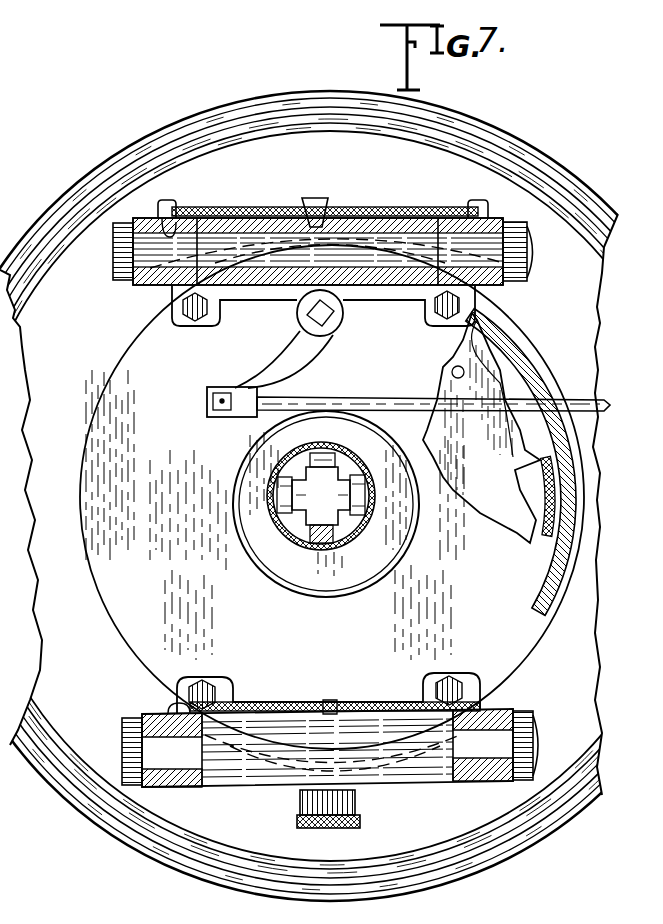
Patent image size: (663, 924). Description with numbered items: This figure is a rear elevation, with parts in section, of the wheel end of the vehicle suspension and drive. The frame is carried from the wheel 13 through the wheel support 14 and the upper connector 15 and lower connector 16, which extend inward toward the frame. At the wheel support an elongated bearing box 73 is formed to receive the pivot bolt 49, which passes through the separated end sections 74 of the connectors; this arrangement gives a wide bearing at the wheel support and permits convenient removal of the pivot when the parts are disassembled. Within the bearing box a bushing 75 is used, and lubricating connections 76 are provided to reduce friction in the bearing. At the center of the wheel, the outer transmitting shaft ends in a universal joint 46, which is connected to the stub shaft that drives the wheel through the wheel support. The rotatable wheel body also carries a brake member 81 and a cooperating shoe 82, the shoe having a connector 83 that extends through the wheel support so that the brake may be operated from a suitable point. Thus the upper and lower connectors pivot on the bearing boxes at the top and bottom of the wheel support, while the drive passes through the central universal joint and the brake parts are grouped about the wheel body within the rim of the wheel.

The wheel 13 is at (73, 797).
The wheel support 14 is at (113, 400).
The upper connector 15 is at (148, 226).
The lower connector 16 is at (197, 787).
The universal joint 46 is at (325, 497).
The pivot bolt 49 is at (523, 260).
The elongated bearing box 73 is at (255, 228).
The separated end sections 74 is at (150, 297).
The bushing 75 is at (140, 243).
The lubricating connections 76 is at (198, 218).
The brake member 81 is at (540, 470).
The shoe 82 is at (543, 497).
The connector 83 is at (302, 348).